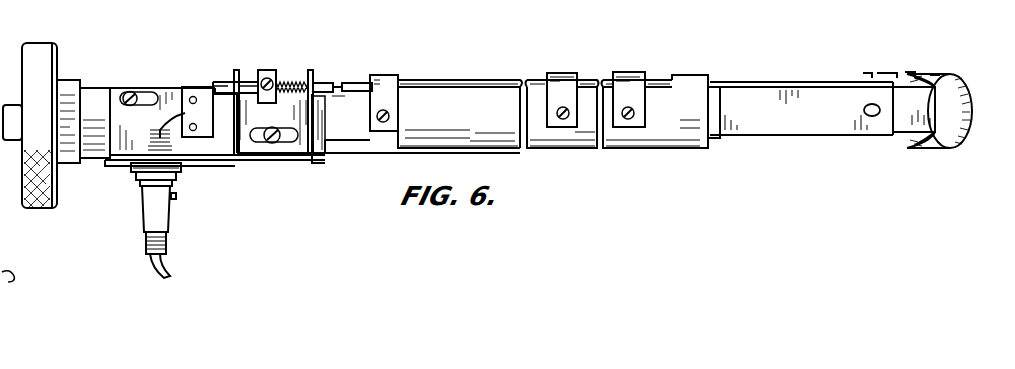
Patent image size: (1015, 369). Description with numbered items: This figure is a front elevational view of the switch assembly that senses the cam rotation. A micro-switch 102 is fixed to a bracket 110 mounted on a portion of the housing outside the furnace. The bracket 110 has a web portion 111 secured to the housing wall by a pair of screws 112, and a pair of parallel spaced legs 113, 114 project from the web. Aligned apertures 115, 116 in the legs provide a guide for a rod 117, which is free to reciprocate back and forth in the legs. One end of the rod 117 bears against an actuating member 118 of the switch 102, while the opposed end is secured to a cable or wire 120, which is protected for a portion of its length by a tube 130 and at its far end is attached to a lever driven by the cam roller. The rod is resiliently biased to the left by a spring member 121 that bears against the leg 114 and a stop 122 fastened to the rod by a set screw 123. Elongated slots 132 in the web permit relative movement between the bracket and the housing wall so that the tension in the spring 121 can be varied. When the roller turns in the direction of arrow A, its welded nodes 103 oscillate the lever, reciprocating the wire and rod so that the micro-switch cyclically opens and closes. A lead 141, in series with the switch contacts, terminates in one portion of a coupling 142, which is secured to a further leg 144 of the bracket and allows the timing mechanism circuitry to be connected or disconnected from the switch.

The switch 102 is at (190, 87).
The nodes 103 is at (948, 78).
The bracket 110 is at (248, 150).
The web portion 111 is at (304, 148).
The screws 112 is at (128, 94).
The leg 113 is at (236, 76).
The leg 114 is at (315, 76).
The aperture 115 is at (252, 80).
The aperture 116 is at (318, 93).
The rod 117 is at (252, 92).
The actuating member 118 is at (214, 92).
The wire 120 is at (340, 86).
The spring member 121 is at (300, 84).
The stop 122 is at (266, 76).
The set screw 123 is at (276, 84).
The tube 130 is at (493, 82).
The elongated slots 132 is at (146, 96).
The lead 141 is at (165, 124).
The coupling 142 is at (127, 172).
The further leg 144 is at (217, 160).